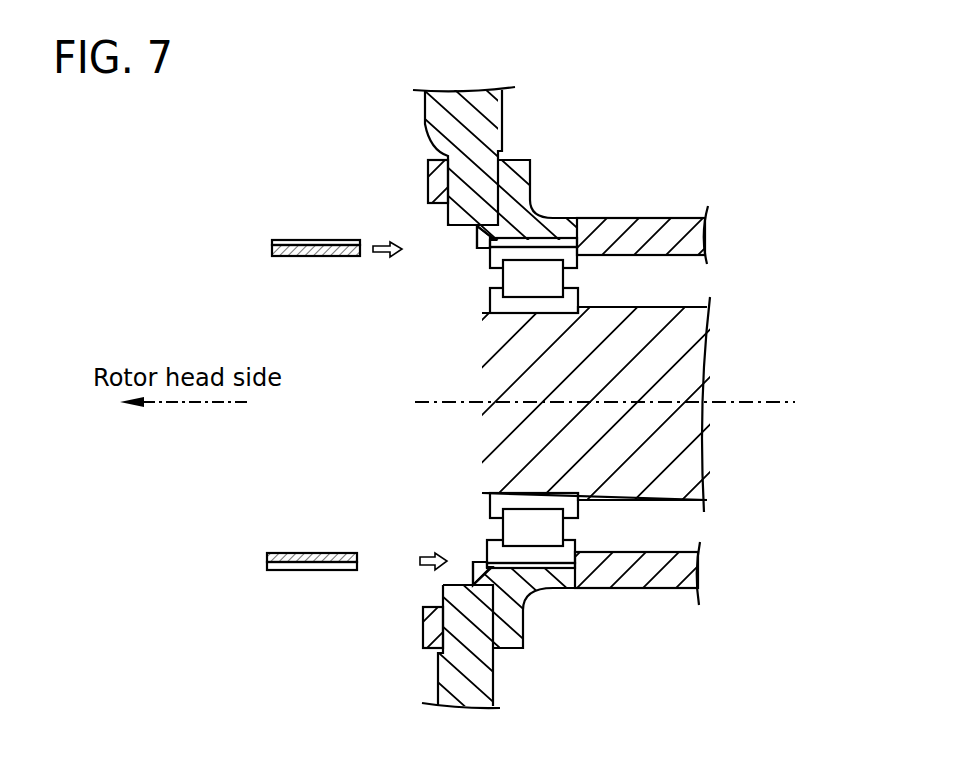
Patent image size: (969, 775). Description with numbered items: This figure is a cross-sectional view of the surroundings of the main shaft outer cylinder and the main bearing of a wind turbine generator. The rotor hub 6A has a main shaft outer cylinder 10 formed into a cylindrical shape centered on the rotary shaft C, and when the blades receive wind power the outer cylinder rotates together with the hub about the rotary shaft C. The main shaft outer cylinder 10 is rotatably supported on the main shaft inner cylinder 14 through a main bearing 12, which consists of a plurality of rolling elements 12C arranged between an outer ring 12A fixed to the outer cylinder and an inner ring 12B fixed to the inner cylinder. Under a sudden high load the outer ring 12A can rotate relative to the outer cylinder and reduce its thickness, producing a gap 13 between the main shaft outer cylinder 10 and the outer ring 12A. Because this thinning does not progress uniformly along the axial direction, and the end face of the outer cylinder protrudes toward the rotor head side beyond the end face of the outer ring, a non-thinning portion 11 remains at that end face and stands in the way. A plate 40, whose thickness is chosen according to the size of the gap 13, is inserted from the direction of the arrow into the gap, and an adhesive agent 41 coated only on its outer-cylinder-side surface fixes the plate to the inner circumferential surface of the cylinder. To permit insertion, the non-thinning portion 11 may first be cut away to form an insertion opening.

The rotor hub 6A is at (492, 128).
The main shaft outer cylinder 10 is at (638, 217).
The non-thinning portion 11 is at (475, 252).
The main bearing 12 is at (345, 273).
The outer ring 12A is at (490, 258).
The inner ring 12B is at (490, 303).
The rolling elements 12C is at (503, 281).
The gap 13 is at (552, 242).
The main shaft inner cylinder 14 is at (667, 502).
The plate 40 is at (290, 403).
The adhesive agent 41 is at (300, 240).
The rotary shaft C is at (765, 402).